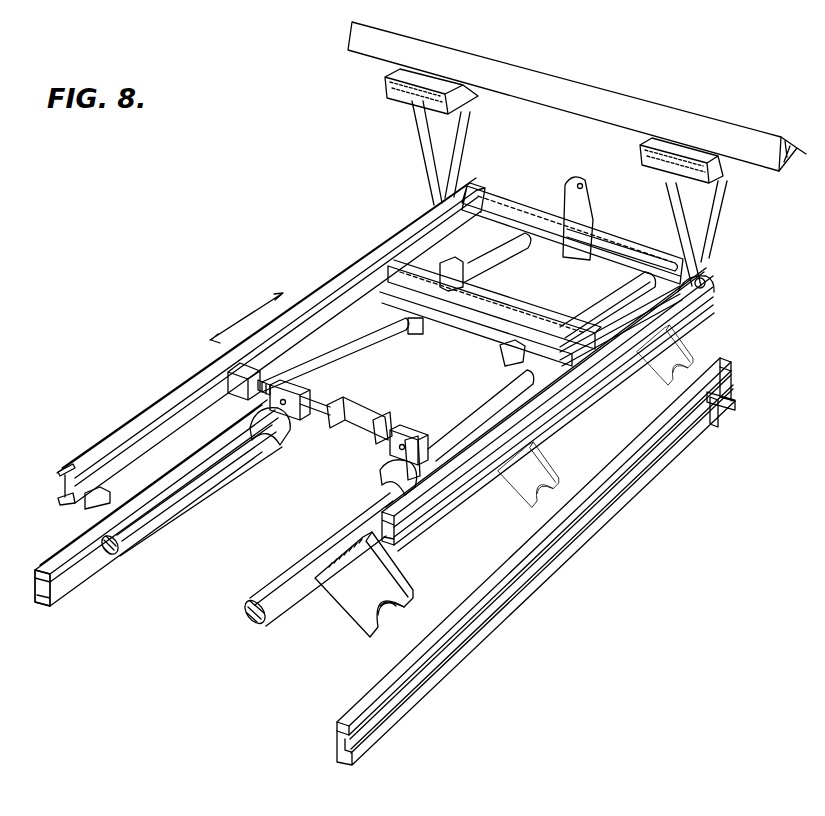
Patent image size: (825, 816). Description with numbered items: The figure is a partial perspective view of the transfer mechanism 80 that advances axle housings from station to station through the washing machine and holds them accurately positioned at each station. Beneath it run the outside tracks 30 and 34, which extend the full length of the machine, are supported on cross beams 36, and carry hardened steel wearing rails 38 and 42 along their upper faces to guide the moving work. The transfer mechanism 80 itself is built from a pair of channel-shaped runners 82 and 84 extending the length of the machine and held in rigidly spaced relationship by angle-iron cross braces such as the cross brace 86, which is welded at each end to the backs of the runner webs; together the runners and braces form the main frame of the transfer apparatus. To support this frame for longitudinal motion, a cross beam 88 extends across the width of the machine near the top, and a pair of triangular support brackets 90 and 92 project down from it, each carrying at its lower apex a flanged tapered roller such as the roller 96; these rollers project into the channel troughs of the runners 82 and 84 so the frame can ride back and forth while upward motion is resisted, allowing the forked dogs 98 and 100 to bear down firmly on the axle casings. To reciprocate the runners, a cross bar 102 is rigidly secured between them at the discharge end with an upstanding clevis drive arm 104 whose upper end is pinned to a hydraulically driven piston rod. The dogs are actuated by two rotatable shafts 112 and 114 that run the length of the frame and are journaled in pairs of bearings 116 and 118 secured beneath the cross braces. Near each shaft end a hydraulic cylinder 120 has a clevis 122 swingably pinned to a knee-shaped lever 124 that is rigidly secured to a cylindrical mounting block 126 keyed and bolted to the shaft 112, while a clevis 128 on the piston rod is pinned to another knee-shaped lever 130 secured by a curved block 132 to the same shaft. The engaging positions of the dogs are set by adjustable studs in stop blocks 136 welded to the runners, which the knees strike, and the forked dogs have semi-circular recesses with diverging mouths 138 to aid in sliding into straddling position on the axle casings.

The track 30 is at (67, 590).
The track 34 is at (587, 530).
The cross beam 36 is at (718, 427).
The wearing rail 38 is at (53, 560).
The wearing rail 42 is at (360, 703).
The transfer mechanism 80 is at (199, 279).
The channel-shaped runner 82 is at (145, 412).
The channel-shaped runner 84 is at (427, 510).
The cross brace 86 is at (493, 300).
The cross beam 88 is at (600, 88).
The triangular support bracket 90 is at (455, 137).
The triangular support bracket 92 is at (708, 245).
The flanged tapered roller 96 is at (690, 297).
The forked dog 98 is at (340, 360).
The forked dog 100 is at (687, 332).
The cross bar 102 is at (513, 200).
The clevis drive arm 104 is at (590, 202).
The rotatable shaft 112 is at (140, 530).
The rotatable shaft 114 is at (246, 615).
The bearing 116 is at (410, 333).
The bearing 118 is at (527, 373).
The hydraulic cylinder 120 is at (363, 410).
The clevis 122 is at (400, 423).
The knee-shaped lever 124 is at (403, 455).
The cylindrical mounting block 126 is at (380, 482).
The clevis 128 is at (307, 410).
The knee-shaped lever 130 is at (273, 385).
The curved block 132 is at (283, 437).
The stop block 136 is at (222, 358).
The diverging mouth 138 is at (393, 605).